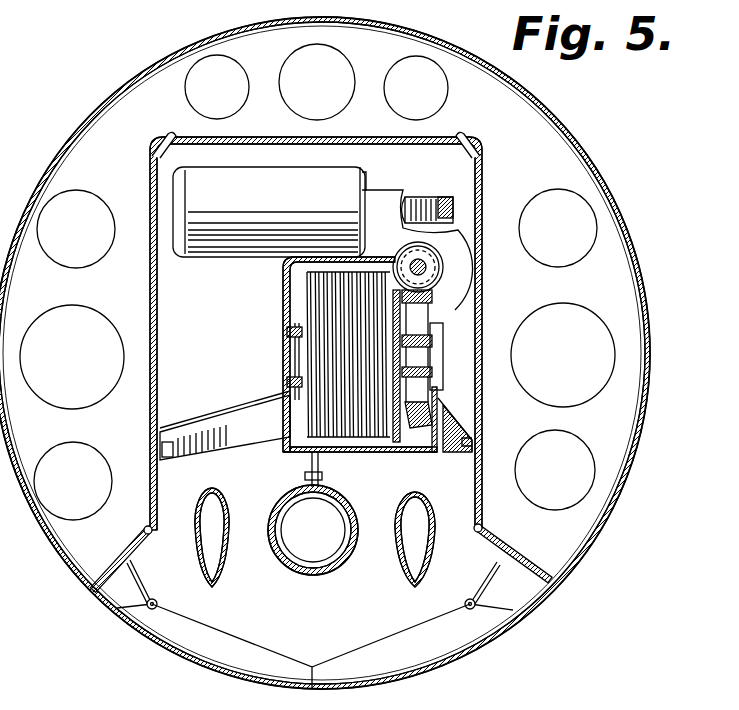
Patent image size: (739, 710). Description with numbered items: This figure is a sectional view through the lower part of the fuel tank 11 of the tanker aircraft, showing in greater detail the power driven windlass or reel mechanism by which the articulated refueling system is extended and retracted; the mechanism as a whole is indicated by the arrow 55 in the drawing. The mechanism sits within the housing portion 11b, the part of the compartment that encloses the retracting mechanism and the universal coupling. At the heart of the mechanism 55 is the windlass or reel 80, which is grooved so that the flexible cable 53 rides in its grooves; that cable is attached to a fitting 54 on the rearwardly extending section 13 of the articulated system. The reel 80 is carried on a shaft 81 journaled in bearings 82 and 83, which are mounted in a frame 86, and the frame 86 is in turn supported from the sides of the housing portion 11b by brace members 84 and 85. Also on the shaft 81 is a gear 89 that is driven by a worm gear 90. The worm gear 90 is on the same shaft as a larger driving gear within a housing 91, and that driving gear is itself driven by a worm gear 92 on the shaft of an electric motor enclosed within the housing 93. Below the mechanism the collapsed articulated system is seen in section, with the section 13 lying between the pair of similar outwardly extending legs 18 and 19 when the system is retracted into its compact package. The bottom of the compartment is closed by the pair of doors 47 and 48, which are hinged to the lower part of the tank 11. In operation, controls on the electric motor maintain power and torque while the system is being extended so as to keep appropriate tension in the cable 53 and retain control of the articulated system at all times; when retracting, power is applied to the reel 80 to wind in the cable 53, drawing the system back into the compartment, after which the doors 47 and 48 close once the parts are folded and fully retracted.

The fuel tank 11 is at (618, 220).
The housing portion 11b is at (152, 308).
The rearwardly extending section 13 is at (345, 540).
The leg 18 is at (227, 558).
The leg 19 is at (423, 577).
The door 47 is at (200, 668).
The door 48 is at (383, 678).
The flexible cable 53 is at (293, 437).
The fitting 54 is at (322, 476).
The actuating mechanism 55 is at (262, 318).
The windlass or reel 80 is at (397, 440).
The shaft 81 is at (417, 348).
The bearing 82 is at (433, 380).
The bearing 83 is at (283, 390).
The brace member 84 is at (483, 425).
The brace member 85 is at (208, 418).
The frame 86 is at (290, 283).
The gear 89 is at (418, 422).
The worm gear 90 is at (437, 268).
The housing 91 is at (455, 232).
The worm gear 92 is at (424, 198).
The housing 93 is at (330, 178).